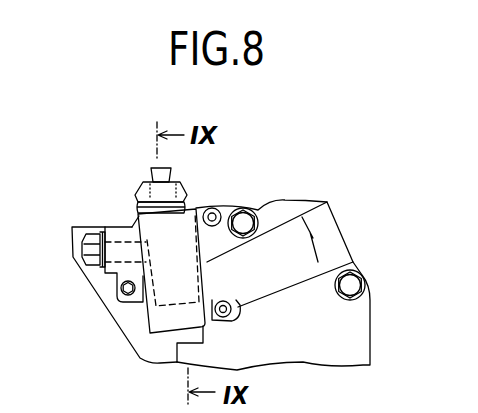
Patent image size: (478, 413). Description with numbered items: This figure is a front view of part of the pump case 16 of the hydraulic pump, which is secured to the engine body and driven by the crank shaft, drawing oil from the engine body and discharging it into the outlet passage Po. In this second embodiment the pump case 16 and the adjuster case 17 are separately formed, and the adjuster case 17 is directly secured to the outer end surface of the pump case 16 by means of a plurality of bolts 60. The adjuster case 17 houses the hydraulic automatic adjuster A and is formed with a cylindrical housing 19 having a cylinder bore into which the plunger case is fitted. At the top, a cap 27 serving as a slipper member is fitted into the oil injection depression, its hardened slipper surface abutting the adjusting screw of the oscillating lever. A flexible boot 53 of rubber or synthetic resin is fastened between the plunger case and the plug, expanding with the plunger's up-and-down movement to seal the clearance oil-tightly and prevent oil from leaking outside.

The pump case 16 is at (364, 342).
The adjuster case 17 is at (204, 338).
The cylindrical housing 19 is at (206, 276).
The cap 27 is at (170, 173).
The flexible boot 53 is at (138, 190).
The bolts 60 is at (203, 218).
The hydraulic automatic adjuster A is at (206, 197).
The outlet passage Po is at (340, 212).